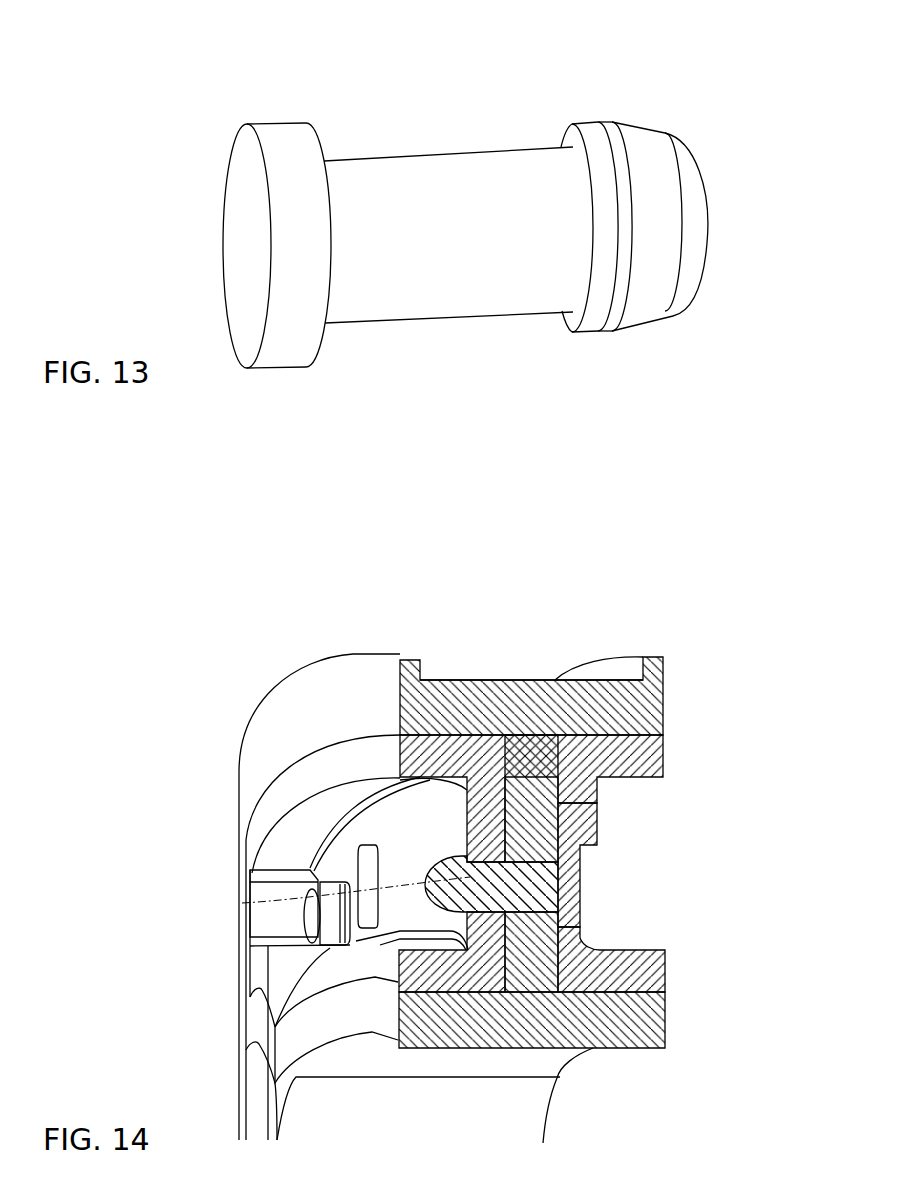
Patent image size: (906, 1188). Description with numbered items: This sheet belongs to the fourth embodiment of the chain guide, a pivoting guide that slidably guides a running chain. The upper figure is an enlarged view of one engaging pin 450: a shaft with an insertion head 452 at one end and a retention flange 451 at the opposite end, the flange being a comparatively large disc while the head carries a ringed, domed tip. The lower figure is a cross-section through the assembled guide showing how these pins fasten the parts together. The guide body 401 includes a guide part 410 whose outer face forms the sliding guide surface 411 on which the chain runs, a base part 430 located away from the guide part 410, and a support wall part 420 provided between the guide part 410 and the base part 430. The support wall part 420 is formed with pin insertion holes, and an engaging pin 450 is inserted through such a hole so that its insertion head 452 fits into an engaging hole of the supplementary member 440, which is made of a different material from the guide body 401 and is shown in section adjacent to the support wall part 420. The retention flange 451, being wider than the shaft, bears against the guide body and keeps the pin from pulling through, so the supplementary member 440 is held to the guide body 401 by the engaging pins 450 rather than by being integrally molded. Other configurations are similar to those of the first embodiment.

In FIG. 13, the engaging pin 450 is at (401, 207).
In FIG. 14, the engaging pin 450 is at (242, 903).
In FIG. 13, the retention flange 451 is at (290, 147).
In FIG. 13, the insertion head 452 is at (653, 213).
In FIG. 14, the housing 401 is at (240, 1017).
In FIG. 14, the bolt head 410 is at (473, 809).
In FIG. 14, the recess of bolt head 411 is at (473, 675).
In FIG. 14, the support wall part 420 is at (597, 798).
In FIG. 14, the nut 430 is at (602, 1017).
In FIG. 14, the supplementary member 440 is at (580, 828).